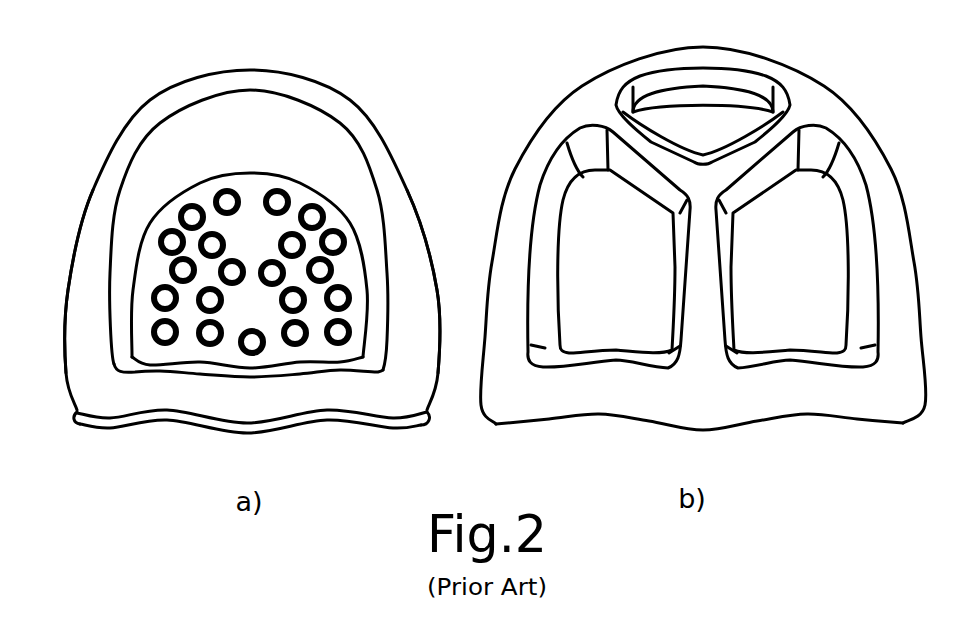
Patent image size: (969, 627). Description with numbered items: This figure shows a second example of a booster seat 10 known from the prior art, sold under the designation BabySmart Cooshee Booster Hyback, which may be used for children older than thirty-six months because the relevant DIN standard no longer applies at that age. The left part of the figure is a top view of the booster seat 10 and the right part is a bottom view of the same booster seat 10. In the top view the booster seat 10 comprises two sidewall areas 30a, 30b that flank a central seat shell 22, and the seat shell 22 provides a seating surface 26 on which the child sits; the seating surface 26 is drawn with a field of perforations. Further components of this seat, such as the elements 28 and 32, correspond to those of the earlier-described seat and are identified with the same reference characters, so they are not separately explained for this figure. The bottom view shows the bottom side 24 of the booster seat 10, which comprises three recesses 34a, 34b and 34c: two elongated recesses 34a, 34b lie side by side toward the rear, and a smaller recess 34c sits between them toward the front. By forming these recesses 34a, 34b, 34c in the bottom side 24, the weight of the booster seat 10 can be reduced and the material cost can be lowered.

The booster seat 10 is at (350, 130).
The seat shell 22 is at (235, 241).
The bottom side 24 is at (840, 397).
The seating surface 26 is at (272, 284).
The tray floor 28 is at (187, 313).
The sidewall area 30a is at (96, 243).
The sidewall area 30b is at (409, 242).
The rim 32 is at (177, 150).
The recess 34a is at (616, 318).
The recess 34b is at (762, 318).
The recess 34c is at (703, 123).